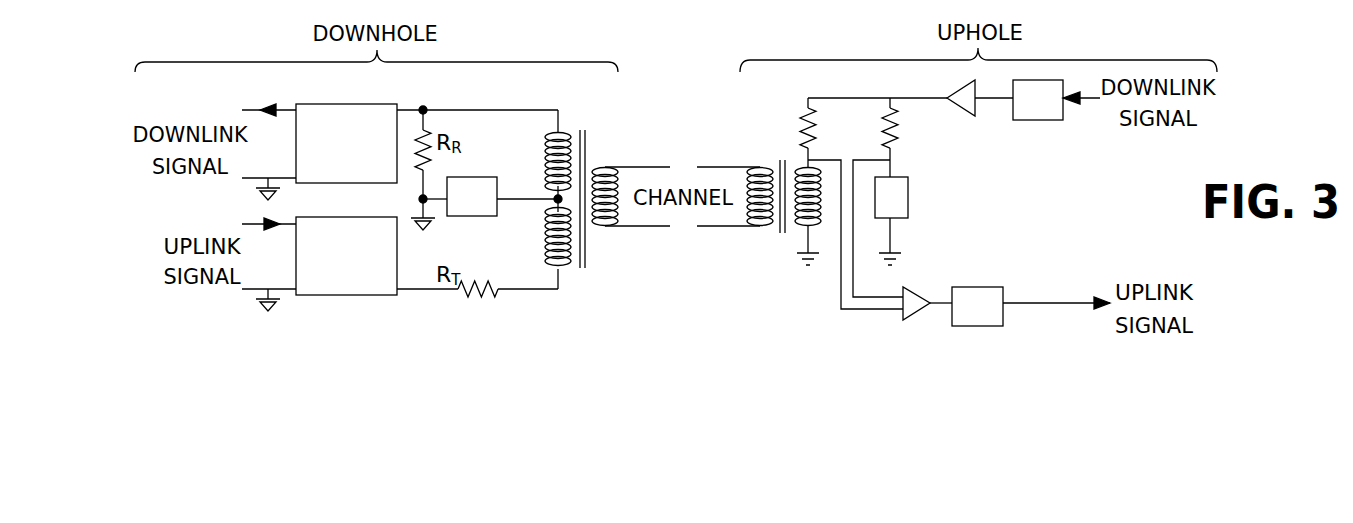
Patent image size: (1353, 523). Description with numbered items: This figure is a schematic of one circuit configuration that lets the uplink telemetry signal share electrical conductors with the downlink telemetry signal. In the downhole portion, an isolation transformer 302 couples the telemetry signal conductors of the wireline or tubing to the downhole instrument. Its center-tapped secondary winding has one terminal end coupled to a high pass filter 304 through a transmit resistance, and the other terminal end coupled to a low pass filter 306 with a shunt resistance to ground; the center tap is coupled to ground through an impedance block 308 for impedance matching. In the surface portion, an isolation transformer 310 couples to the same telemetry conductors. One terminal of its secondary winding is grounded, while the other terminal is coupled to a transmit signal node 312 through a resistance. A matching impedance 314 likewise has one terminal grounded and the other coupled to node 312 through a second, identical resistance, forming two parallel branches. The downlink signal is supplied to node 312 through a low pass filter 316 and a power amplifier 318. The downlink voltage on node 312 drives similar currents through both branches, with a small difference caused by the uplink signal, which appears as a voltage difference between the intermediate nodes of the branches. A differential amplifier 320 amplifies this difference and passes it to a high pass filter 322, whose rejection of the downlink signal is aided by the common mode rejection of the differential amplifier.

The isolation transformer 302 is at (602, 241).
The high pass filter 304 is at (347, 296).
The low pass filter 306 is at (346, 183).
The impedance block 308 is at (492, 217).
The isolation transformer 310 is at (781, 246).
The transmit signal node 312 is at (854, 97).
The matching impedance 314 is at (908, 203).
The low pass filter 316 is at (1057, 121).
The power amplifier 318 is at (968, 110).
The differential amplifier 320 is at (907, 320).
The high pass filter 322 is at (999, 328).